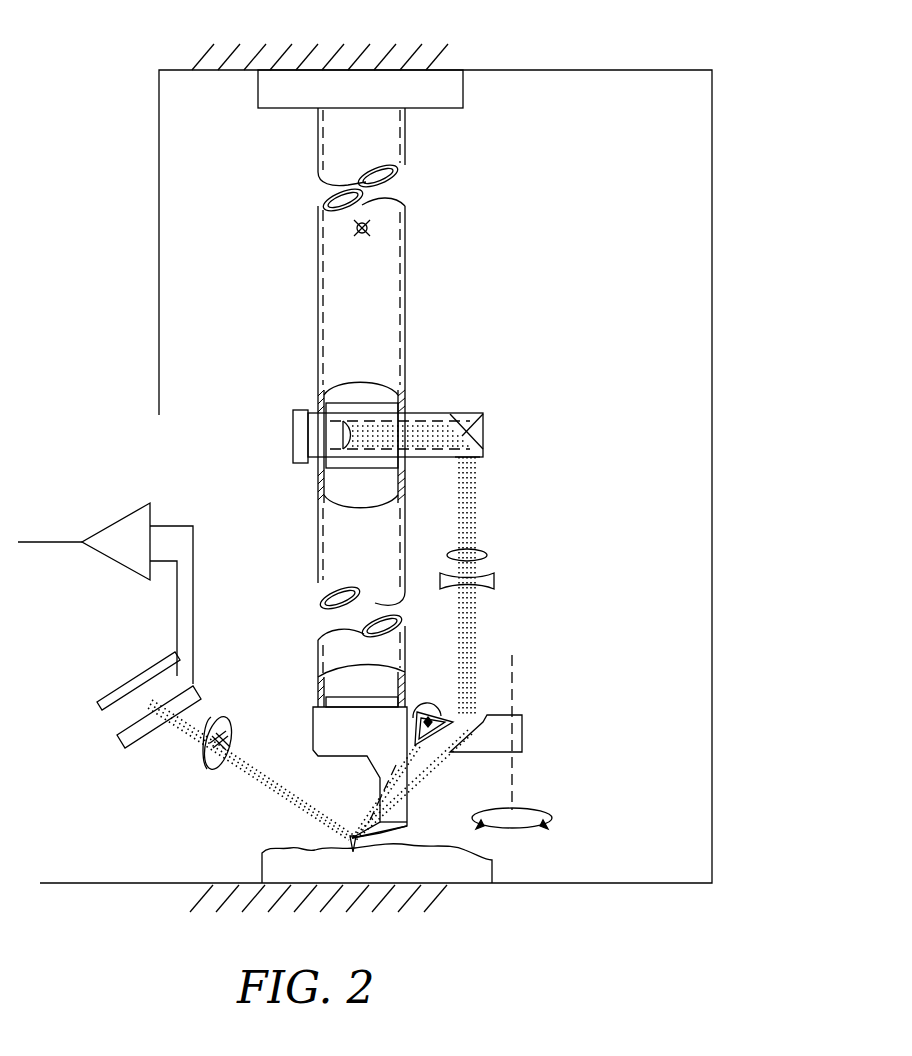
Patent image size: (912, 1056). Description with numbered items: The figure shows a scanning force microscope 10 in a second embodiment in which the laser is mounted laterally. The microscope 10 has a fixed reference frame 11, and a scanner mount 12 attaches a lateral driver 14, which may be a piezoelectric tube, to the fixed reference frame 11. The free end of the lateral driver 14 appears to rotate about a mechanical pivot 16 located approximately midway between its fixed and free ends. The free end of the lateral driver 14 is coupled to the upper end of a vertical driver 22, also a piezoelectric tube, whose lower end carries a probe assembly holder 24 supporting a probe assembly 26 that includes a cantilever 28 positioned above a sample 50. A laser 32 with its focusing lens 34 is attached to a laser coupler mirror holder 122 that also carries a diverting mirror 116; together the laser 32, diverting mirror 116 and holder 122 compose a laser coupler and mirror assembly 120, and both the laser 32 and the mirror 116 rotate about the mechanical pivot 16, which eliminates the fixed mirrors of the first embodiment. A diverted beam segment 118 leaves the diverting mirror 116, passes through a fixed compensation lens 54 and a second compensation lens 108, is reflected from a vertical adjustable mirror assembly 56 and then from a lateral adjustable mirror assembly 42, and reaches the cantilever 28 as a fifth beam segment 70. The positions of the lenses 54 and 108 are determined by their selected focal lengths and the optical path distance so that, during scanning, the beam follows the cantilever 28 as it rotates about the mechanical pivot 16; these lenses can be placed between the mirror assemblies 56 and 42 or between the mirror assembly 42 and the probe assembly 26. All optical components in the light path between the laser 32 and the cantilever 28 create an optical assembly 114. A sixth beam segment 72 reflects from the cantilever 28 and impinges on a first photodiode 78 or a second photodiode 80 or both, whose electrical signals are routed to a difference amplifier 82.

The microscope 10 is at (740, 126).
The fixed reference frame 11 is at (606, 69).
The scanner mount 12 is at (437, 86).
The lateral driver 14 is at (367, 341).
The mechanical pivot 16 is at (368, 226).
The vertical driver 22 is at (348, 548).
The probe assembly holder 24 is at (325, 727).
The probe assembly 26 is at (410, 818).
The cantilever 28 is at (348, 836).
The laser 32 is at (300, 432).
The focusing lens 34 is at (350, 430).
The lateral adjustable mirror assembly 42 is at (425, 700).
The sample 50 is at (492, 868).
The fixed compensation lens 54 is at (488, 556).
The vertical adjustable mirror assembly 56 is at (530, 735).
The fifth beam segment 70 is at (255, 768).
The sixth beam segment 72 is at (200, 757).
The first photodiode 78 is at (110, 706).
The second photodiode 80 is at (112, 742).
The difference amplifier 82 is at (122, 532).
The second compensation lens 108 is at (493, 584).
The optical assembly 114 is at (533, 652).
The diverting mirror 116 is at (485, 422).
The diverted beam segment 118 is at (480, 531).
The laser coupler and mirror assembly 120 is at (500, 436).
The laser coupler mirror holder 122 is at (485, 457).